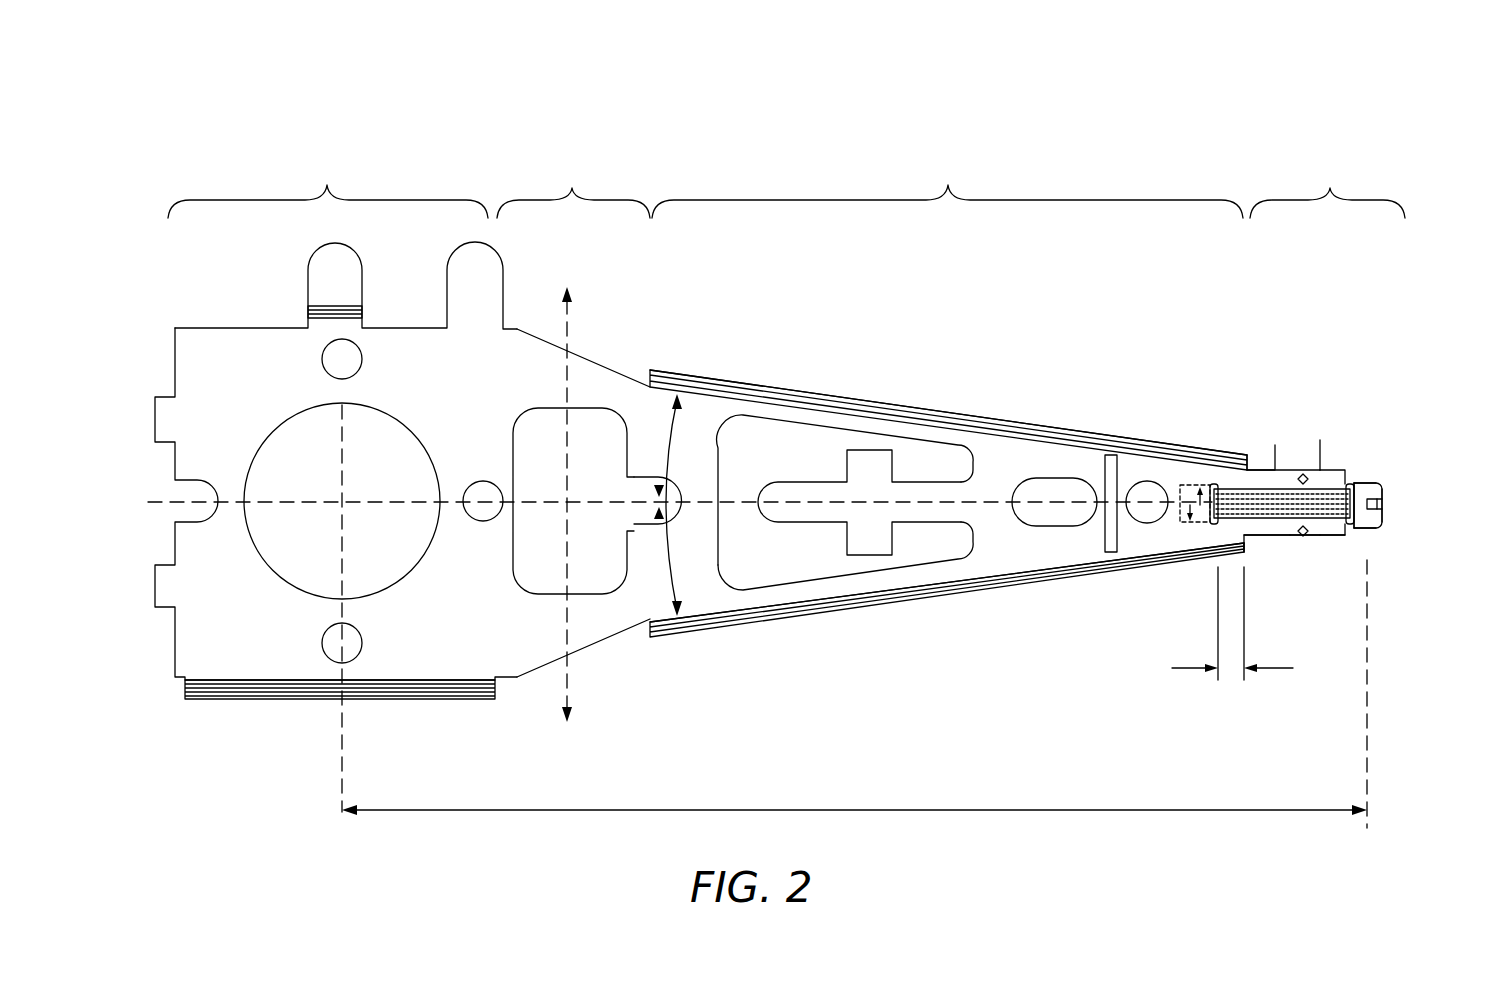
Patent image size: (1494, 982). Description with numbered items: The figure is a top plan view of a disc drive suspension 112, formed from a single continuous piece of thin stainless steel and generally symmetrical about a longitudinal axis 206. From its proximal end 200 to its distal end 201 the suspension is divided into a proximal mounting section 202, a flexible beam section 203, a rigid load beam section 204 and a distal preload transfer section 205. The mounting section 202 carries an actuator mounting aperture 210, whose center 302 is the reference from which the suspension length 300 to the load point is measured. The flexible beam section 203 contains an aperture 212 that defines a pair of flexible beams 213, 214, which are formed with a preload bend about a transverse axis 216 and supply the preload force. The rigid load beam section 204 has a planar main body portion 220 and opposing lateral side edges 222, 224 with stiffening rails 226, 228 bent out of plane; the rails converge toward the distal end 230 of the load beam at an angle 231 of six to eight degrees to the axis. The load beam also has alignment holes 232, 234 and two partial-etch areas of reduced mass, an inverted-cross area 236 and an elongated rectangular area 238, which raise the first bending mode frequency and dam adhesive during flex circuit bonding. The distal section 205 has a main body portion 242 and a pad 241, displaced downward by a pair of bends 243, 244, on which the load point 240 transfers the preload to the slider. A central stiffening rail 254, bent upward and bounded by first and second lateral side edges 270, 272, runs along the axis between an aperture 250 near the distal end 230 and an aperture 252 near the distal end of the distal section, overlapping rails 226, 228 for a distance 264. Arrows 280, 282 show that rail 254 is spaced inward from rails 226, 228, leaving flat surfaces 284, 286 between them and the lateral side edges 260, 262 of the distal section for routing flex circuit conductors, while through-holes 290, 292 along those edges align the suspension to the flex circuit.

The suspension 112 is at (357, 125).
The proximal end 200 is at (180, 468).
The distal end 201 is at (1383, 485).
The proximal mounting section 202 is at (328, 184).
The flexible beam section 203 is at (573, 184).
The rigid load beam section 204 is at (947, 184).
The distal preload transfer section 205 is at (1327, 184).
The longitudinal axis 206 is at (1385, 502).
The actuator mounting aperture 210 is at (283, 423).
The aperture 212 is at (537, 412).
The flexible beam 213 is at (595, 390).
The flexible beam 214 is at (597, 634).
The transverse axis 216 is at (566, 681).
The main body portion 220 is at (708, 413).
The lateral side edge 222 is at (948, 392).
The lateral side edge 224 is at (947, 622).
The stiffening rail 226 is at (891, 390).
The stiffening rail 228 is at (870, 614).
The distal end of rigid load beam section 230 is at (1252, 470).
The angle 231 is at (677, 420).
The alignment hole 232 is at (1018, 487).
The alignment hole 234 is at (1146, 481).
The area of reduced mass 236 is at (718, 513).
The area of reduced mass 238 is at (1103, 540).
The load point 240 is at (1365, 528).
The pad 241 is at (1383, 513).
The main body portion 242 is at (1360, 483).
The bend 243 is at (1383, 508).
The bend 244 is at (1380, 522).
The aperture 250 is at (1208, 520).
The aperture 252 is at (1370, 484).
The stiffening rail 254 is at (1352, 484).
The lateral side edge 260 is at (1273, 489).
The lateral side edge 262 is at (1246, 552).
The distance 264 is at (1218, 646).
The first lateral side edge 270 is at (1300, 472).
The second lateral side edge 272 is at (1335, 537).
The arrow 280 is at (1207, 431).
The arrow 282 is at (1192, 575).
The flat surface 284 is at (1226, 470).
The flat surface 286 is at (1280, 537).
The through-hole 290 is at (1310, 470).
The through-hole 292 is at (1305, 536).
The length 300 is at (800, 810).
The center 302 is at (341, 502).